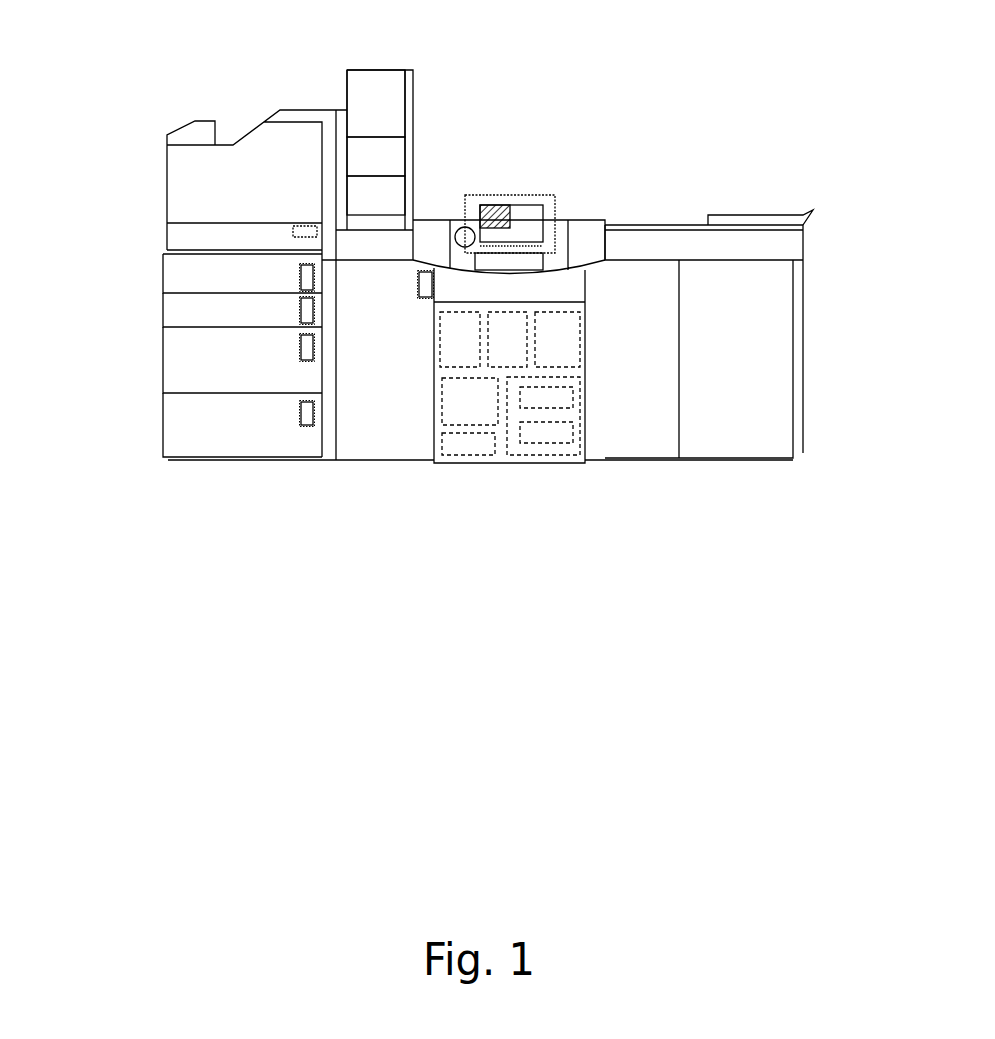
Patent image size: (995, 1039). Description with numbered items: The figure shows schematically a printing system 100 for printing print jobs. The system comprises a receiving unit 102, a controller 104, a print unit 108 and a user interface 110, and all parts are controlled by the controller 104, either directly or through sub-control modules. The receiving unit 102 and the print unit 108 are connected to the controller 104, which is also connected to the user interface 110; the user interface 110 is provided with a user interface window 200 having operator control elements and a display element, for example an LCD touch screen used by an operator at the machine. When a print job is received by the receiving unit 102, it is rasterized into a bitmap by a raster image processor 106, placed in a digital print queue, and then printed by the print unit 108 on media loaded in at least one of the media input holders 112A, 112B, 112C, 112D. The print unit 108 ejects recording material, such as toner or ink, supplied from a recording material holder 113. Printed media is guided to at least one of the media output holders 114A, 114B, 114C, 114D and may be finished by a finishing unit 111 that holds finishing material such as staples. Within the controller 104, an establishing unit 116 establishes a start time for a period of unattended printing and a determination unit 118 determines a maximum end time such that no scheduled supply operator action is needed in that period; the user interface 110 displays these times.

The printing system 100 is at (784, 80).
The receiving unit 102 is at (563, 333).
The controller 104 is at (582, 373).
The raster image processor 106 is at (463, 333).
The print unit 108 is at (462, 403).
The user interface 110 is at (528, 193).
The finishing unit 111 is at (478, 450).
The media input holder 112A is at (165, 423).
The media input holder 112B is at (165, 357).
The media input holder 112C is at (165, 308).
The media input holder 112D is at (165, 274).
The recording material holder 113 is at (507, 347).
The media output holder 114A is at (768, 336).
The media output holder 114B is at (387, 83).
The media output holder 114C is at (368, 157).
The media output holder 114D is at (375, 198).
The establishing unit 116 is at (570, 408).
The determination unit 118 is at (543, 443).
The user interface window 200 is at (513, 230).